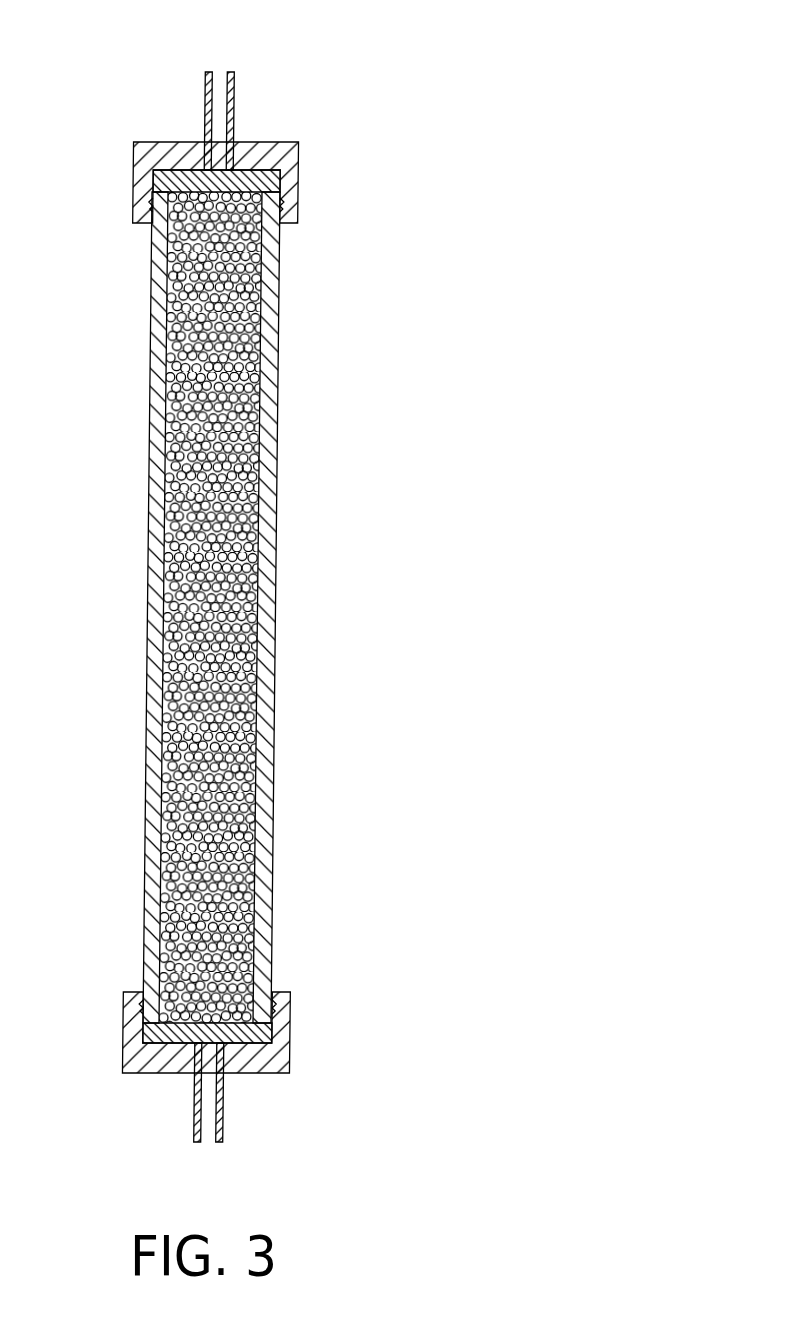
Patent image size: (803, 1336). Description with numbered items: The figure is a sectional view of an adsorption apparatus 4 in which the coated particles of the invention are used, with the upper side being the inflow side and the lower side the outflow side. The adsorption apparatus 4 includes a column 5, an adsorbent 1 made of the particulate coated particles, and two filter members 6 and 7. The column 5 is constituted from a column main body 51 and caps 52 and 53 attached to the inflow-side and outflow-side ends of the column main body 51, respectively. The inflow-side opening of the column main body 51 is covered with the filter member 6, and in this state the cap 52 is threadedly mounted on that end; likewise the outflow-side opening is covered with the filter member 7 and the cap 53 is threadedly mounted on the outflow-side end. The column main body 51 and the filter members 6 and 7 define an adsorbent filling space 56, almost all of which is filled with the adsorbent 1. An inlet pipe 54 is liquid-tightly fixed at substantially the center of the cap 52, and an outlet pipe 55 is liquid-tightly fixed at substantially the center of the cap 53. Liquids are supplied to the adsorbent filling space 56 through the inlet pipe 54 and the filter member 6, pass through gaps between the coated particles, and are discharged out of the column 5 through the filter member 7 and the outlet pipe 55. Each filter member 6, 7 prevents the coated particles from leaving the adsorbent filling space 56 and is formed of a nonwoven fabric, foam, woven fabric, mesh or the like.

The adsorbent 1 is at (172, 248).
The adsorption apparatus 4 is at (390, 92).
The column 5 is at (312, 424).
The filter member 6 is at (273, 178).
The filter member 7 is at (270, 1028).
The column main body 51 is at (270, 550).
The cap 52 is at (163, 155).
The cap 53 is at (259, 1060).
The inlet pipe 54 is at (233, 107).
The outlet pipe 55 is at (193, 1117).
The adsorbent filling space 56 is at (243, 333).